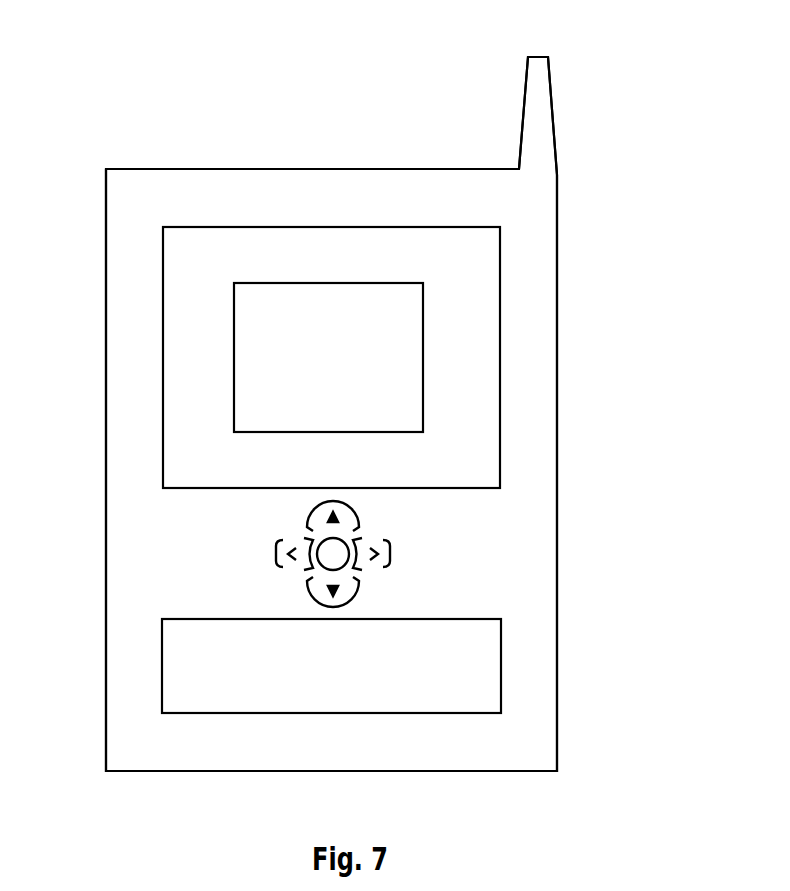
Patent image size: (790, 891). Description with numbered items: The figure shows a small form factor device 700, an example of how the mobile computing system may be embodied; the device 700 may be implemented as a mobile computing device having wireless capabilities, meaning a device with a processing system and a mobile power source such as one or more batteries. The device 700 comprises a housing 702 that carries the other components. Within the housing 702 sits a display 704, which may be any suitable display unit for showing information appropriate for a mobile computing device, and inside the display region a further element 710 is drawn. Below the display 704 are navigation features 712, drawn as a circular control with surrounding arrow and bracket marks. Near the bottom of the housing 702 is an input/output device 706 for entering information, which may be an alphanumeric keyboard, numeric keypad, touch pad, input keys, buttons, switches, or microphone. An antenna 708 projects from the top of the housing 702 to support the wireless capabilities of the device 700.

The small form factor device 700 is at (118, 69).
The housing 702 is at (557, 470).
The display 704 is at (500, 245).
The input/output (I/O) device 706 is at (501, 658).
The antenna 708 is at (523, 105).
The display window / indicator 710 is at (423, 382).
The navigation features 712 is at (418, 546).